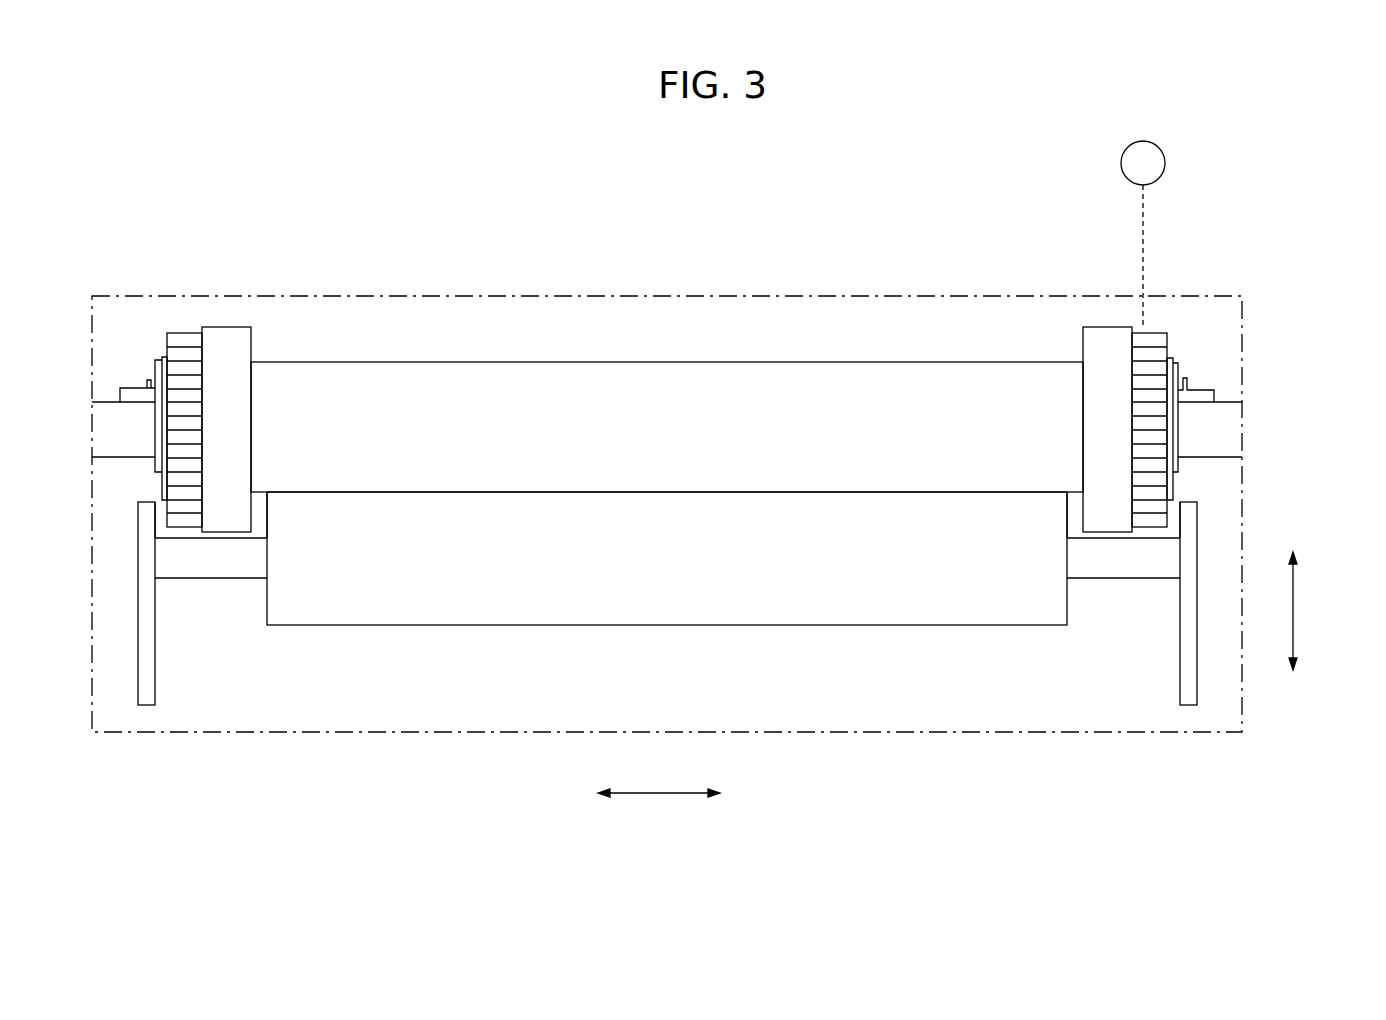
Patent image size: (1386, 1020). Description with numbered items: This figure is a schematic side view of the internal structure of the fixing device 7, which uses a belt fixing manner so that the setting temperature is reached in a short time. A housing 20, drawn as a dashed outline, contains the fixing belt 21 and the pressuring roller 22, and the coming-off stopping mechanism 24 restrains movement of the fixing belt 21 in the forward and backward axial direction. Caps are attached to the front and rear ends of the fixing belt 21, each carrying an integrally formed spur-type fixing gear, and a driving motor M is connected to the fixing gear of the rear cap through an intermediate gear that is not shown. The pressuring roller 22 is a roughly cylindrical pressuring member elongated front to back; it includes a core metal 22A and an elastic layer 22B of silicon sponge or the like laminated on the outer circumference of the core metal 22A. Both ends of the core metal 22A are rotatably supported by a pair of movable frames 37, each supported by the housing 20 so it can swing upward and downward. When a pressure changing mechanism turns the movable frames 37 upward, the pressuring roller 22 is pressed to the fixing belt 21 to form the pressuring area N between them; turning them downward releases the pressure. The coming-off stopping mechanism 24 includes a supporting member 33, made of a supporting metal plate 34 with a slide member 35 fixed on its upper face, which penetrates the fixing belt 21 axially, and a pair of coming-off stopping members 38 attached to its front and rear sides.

The fixing device 7 is at (689, 213).
The housing 20 is at (857, 296).
The fixing belt 21 is at (937, 372).
The pressuring roller 22 is at (1101, 687).
The core metal 22A is at (1094, 568).
The elastic layer 22B is at (1032, 598).
The coming-off stopping mechanism 24 is at (1335, 352).
The supporting member 33 is at (1297, 382).
The supporting metal plate 34 is at (1235, 430).
The slide member 35 is at (1206, 399).
The movable frame 37 is at (150, 706).
The coming-off stopping member 38 is at (1178, 368).
The driving motor M is at (1165, 163).
The pressuring area N is at (742, 491).